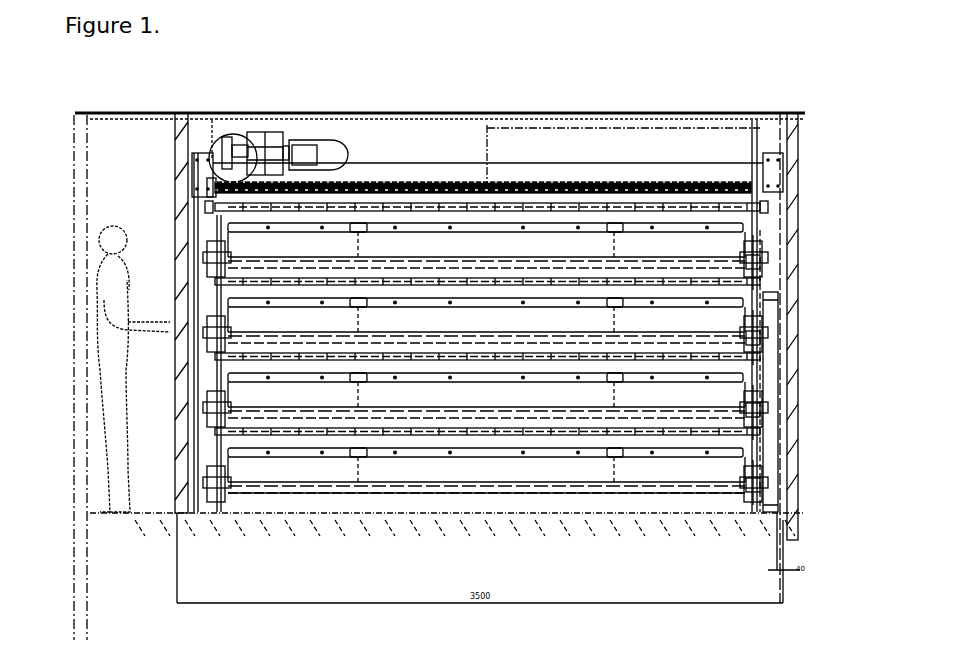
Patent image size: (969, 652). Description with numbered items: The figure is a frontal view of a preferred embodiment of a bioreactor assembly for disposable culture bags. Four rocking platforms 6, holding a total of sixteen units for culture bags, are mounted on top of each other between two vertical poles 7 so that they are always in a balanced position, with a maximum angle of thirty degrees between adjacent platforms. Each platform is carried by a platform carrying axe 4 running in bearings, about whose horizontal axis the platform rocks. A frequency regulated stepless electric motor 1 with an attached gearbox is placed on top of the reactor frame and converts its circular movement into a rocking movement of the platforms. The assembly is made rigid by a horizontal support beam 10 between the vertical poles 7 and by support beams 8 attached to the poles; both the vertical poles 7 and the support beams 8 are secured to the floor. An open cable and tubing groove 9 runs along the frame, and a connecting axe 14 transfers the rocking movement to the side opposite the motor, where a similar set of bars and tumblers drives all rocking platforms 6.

The stepless electric motor 1 is at (350, 155).
The platform carrying axe running in bearings 4 is at (760, 262).
The rocking platform 6 is at (485, 362).
The vertical pole 7 is at (770, 244).
The support beam 8 is at (762, 450).
The open cable and tubing groove 9 is at (768, 208).
The horizontal support beam 10 is at (725, 175).
The connecting axe 14 is at (760, 128).